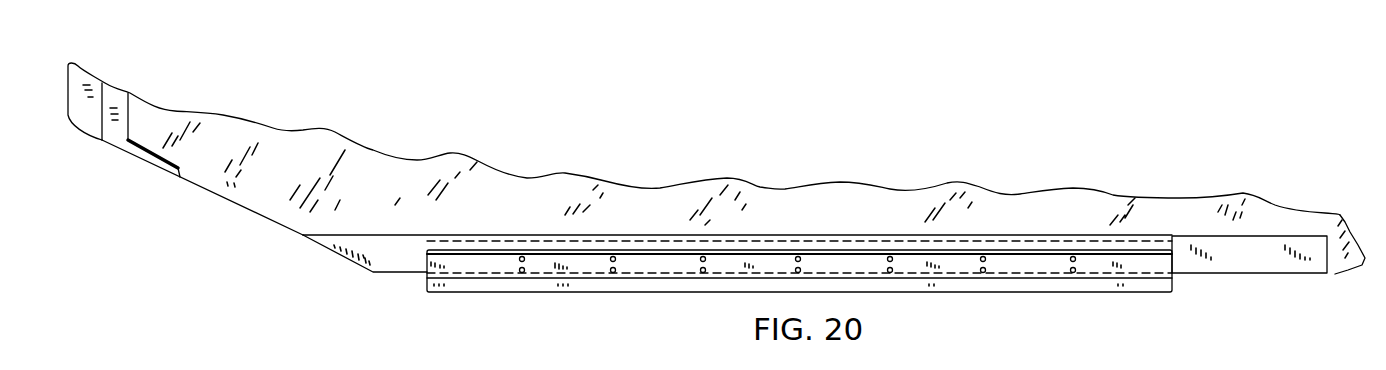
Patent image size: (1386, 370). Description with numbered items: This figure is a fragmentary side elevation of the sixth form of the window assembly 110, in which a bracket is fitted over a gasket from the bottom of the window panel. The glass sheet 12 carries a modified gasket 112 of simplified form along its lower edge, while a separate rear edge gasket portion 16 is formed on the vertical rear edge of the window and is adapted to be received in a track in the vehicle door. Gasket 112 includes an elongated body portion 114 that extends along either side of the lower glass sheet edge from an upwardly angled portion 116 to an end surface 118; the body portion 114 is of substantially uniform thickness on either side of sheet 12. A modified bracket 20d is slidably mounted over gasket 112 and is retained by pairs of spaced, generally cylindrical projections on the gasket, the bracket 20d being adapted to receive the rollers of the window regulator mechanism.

The sheet 12 is at (375, 172).
The rear edge gasket portion 16 is at (125, 147).
The modified bracket 20d is at (565, 293).
The window assembly 110 is at (1022, 170).
The modified gasket 112 is at (380, 237).
The elongated body portion 114 is at (1273, 266).
The upwardly angled portion 116 is at (327, 250).
The end surface 118 is at (1330, 265).